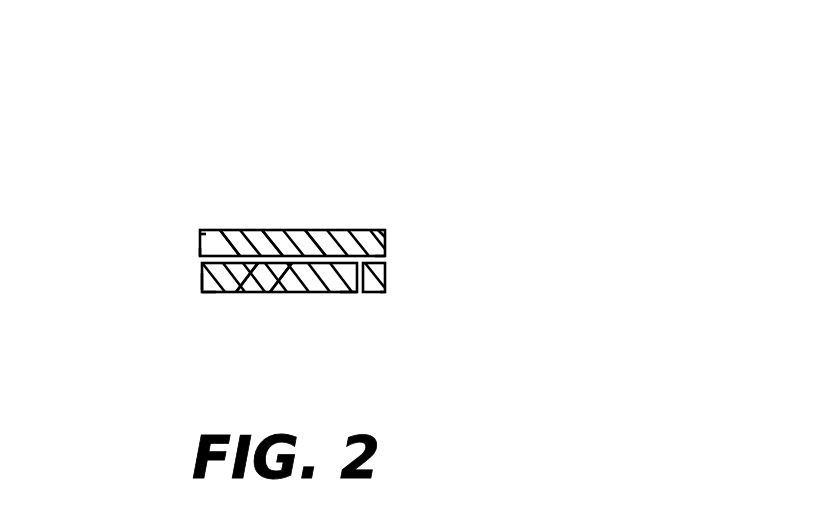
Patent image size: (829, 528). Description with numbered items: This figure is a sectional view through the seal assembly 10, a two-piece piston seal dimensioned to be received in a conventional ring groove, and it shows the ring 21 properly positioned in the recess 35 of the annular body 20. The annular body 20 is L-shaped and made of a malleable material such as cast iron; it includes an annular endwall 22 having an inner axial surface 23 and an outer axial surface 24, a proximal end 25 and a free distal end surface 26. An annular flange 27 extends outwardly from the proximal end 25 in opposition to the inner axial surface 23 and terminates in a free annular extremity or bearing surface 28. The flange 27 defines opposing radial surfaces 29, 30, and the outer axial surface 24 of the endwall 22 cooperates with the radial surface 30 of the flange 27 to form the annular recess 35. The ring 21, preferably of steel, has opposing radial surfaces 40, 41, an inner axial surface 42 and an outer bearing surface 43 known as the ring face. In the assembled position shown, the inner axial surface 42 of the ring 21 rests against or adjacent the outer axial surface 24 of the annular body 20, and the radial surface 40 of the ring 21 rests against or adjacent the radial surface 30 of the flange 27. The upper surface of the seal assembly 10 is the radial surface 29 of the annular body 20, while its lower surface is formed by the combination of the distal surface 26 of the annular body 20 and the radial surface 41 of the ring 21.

The seal assembly 10 is at (372, 185).
The annular body 20 is at (368, 229).
The ring 21 is at (300, 285).
The annular endwall 22 is at (385, 279).
The inner axial surface 23 is at (385, 257).
The outer axial surface 24 is at (312, 230).
The proximal end 25 is at (388, 231).
The distal end surface 26 is at (385, 295).
The annular flange 27 is at (200, 251).
The bearing surface 28 is at (200, 236).
The radial surface 29 is at (218, 231).
The radial surface 30 is at (212, 294).
The annular recess 35 is at (245, 292).
The radial surface 40 is at (272, 230).
The radial surface 41 is at (280, 292).
The inner axial surface 42 is at (362, 292).
The bearing surface 43 is at (202, 279).